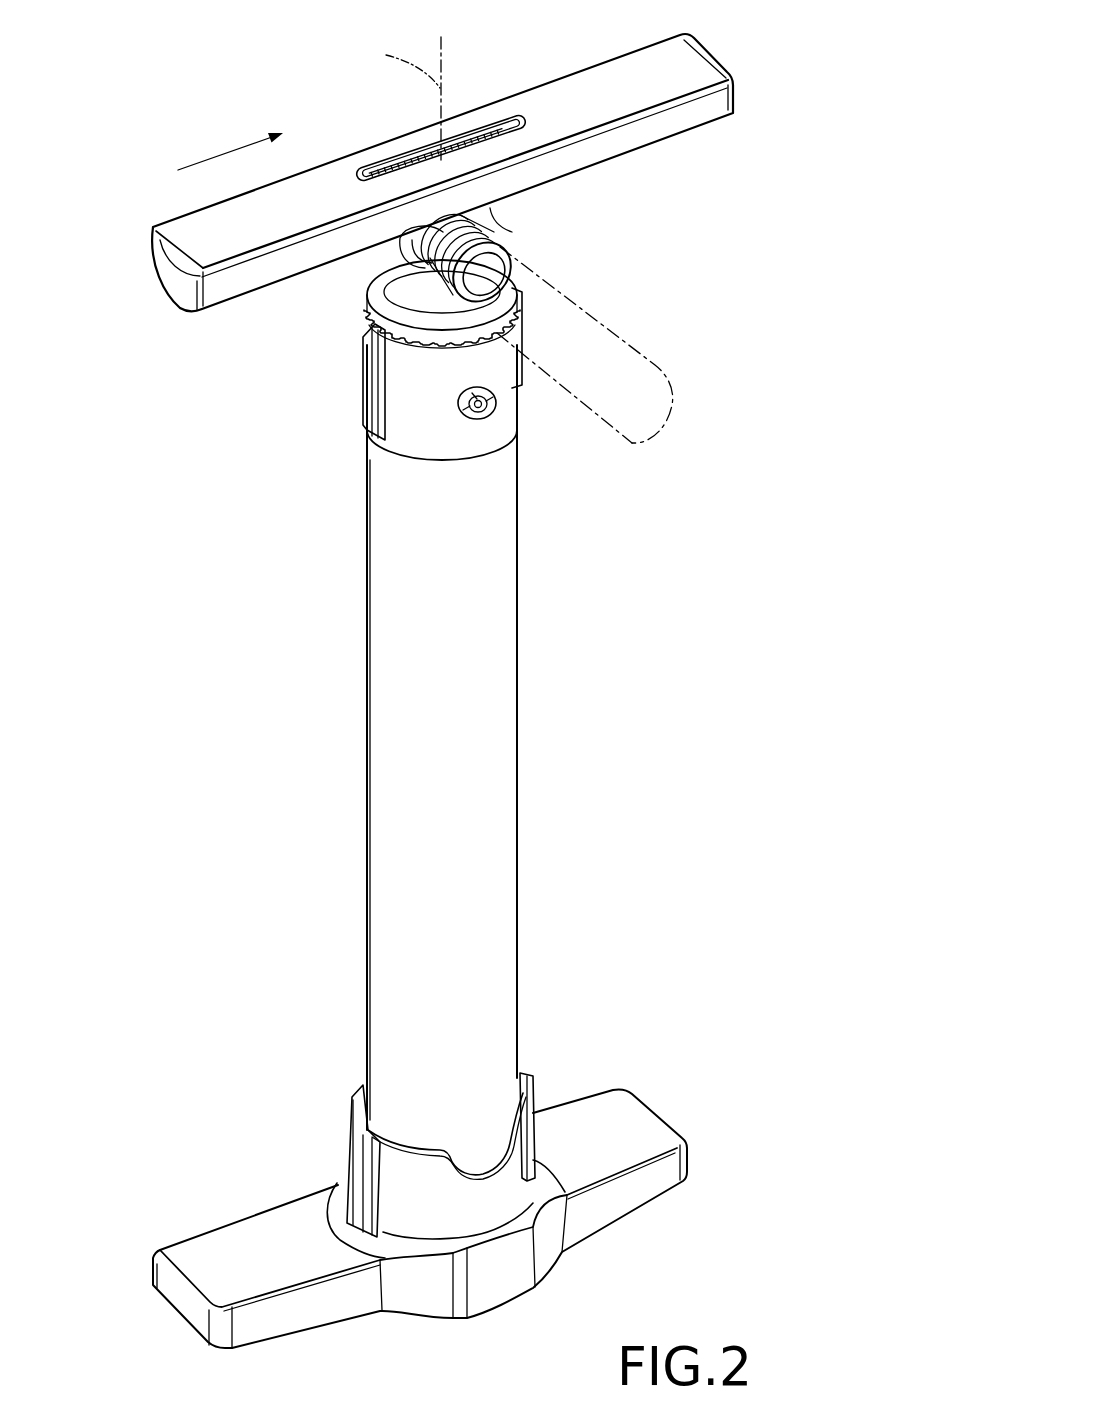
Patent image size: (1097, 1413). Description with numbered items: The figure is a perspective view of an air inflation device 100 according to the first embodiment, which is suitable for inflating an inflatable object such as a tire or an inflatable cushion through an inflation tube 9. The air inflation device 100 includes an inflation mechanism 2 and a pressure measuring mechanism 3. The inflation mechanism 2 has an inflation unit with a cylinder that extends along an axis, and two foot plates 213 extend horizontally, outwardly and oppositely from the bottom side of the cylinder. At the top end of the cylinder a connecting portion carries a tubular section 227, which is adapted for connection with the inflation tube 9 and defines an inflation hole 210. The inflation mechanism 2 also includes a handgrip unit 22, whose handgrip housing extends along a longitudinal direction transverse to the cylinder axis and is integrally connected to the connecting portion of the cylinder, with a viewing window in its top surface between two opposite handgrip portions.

The air inflation device 100 is at (140, 170).
The handgrip unit 22 is at (730, 52).
The pressure measuring mechanism 3 is at (481, 120).
The tubular section 227 is at (498, 236).
The inflation tube 9 is at (603, 302).
The inflation hole 210 is at (472, 278).
The inflation mechanism 2 is at (330, 580).
The foot plates 213 is at (225, 1247).